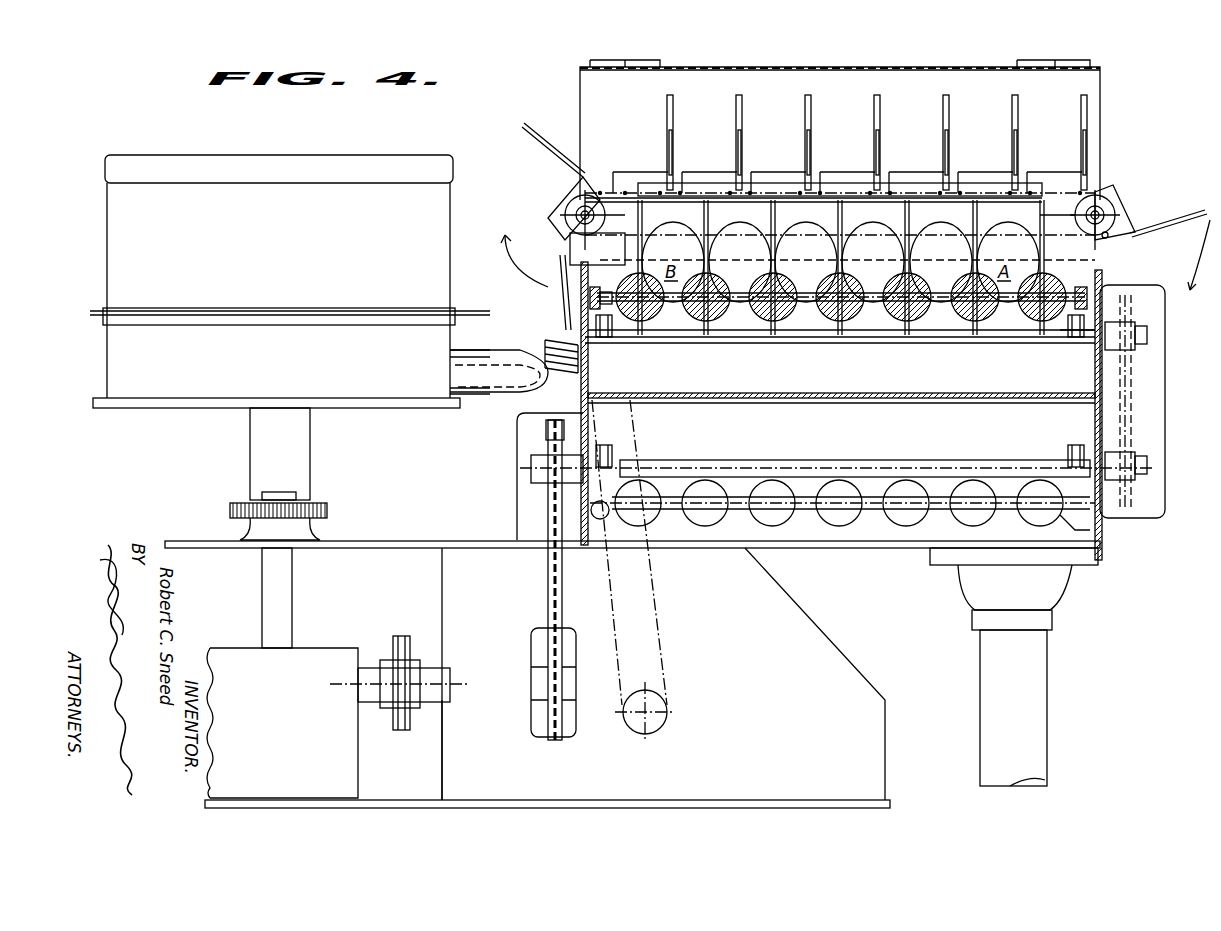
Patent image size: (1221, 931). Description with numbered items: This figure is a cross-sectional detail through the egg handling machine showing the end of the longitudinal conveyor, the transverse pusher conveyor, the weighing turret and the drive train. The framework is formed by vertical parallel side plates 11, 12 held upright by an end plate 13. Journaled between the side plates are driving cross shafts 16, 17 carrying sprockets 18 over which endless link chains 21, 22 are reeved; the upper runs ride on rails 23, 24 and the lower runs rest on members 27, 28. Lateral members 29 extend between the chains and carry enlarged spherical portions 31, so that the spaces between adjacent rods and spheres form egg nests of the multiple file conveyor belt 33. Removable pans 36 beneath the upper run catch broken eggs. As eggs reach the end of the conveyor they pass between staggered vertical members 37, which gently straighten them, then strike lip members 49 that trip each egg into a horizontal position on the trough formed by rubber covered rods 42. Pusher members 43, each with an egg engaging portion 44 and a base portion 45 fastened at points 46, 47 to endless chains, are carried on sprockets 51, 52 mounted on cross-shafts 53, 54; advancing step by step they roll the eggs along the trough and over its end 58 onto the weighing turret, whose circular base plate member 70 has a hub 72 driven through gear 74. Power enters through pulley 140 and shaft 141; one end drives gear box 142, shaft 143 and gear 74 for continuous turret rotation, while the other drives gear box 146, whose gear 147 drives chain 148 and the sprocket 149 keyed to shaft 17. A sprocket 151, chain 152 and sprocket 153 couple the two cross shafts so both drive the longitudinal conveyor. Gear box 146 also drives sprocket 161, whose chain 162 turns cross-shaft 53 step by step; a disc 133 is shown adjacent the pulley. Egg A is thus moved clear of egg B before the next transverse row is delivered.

The side plate 11 is at (1100, 278).
The side plate 12 is at (590, 385).
The end plate 13 is at (1090, 110).
The cross shaft 16 is at (1145, 320).
The cross shaft 17 is at (1148, 480).
The sprocket 18 is at (604, 337).
The endless link chain 21 is at (1082, 287).
The endless link chain 22 is at (604, 287).
The rail 23 is at (612, 310).
The rail 24 is at (1055, 328).
The lower run support member 27 is at (605, 520).
The lower run support member 28 is at (1075, 528).
The lateral member 29 is at (855, 322).
The spherical portion 31 is at (960, 322).
The multiple file conveyor belt 33 is at (783, 320).
The removable pan 36 is at (722, 340).
The vertical longitudinally extending member 37 is at (838, 205).
The rubber covered rod 42 is at (545, 380).
The pusher member 43 is at (560, 140).
The egg engaging portion 44 is at (672, 113).
The base portion 45 is at (700, 172).
The securing point 46 is at (1108, 188).
The securing point 47 is at (1108, 238).
The lip member 49 is at (905, 178).
The sprocket 51 is at (558, 225).
The sprocket 52 is at (1040, 215).
The cross-shaft 53 is at (590, 195).
The cross-shaft 54 is at (1088, 225).
The trough end 58 is at (548, 340).
The circular base plate member 70 is at (428, 410).
The hub 72 is at (302, 458).
The gear 74 is at (328, 512).
The clutch disc 133 is at (397, 635).
The pulley 140 is at (412, 645).
The shaft 141 is at (438, 700).
The gear box 142 is at (232, 645).
The shaft 143 is at (295, 592).
The gear box 146 is at (442, 775).
The gear 147 is at (565, 660).
The chain 148 is at (560, 590).
The sprocket 149 is at (530, 465).
The sprocket 151 is at (1147, 450).
The chain 152 is at (1133, 390).
The sprocket 153 is at (1147, 350).
The sprocket 161 is at (667, 705).
The chain 162 is at (660, 625).